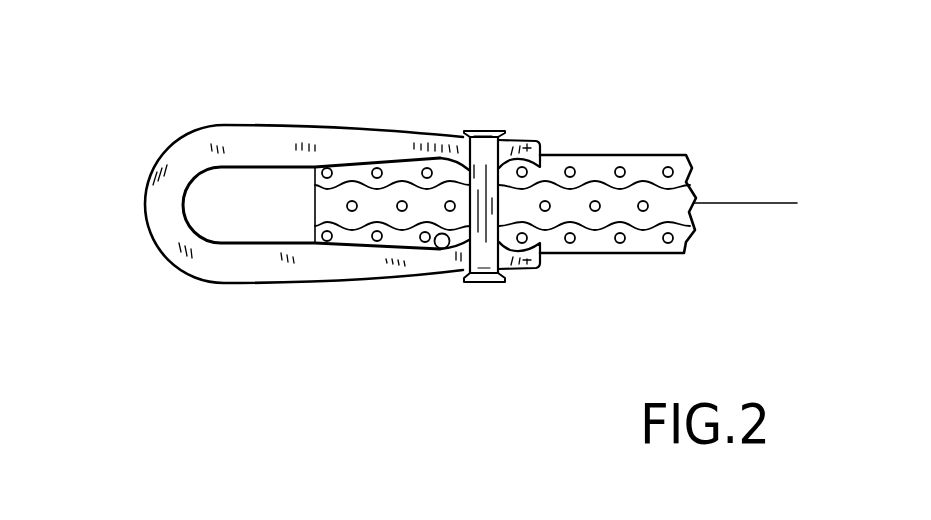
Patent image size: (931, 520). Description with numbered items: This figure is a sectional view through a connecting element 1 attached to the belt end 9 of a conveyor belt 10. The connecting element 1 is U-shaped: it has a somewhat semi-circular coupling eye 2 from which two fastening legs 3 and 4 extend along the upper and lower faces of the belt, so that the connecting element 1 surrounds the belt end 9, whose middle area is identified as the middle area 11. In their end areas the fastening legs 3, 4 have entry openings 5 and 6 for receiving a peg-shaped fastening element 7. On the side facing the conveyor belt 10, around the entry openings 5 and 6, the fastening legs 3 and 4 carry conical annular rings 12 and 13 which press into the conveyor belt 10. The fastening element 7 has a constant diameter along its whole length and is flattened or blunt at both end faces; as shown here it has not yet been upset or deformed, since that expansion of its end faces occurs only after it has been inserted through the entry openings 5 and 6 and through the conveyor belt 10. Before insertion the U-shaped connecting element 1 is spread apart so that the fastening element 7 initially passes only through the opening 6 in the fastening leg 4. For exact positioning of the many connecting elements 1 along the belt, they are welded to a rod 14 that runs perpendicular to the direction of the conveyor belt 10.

The connecting element 1 is at (444, 212).
The coupling eye 2 is at (150, 210).
The fastening leg 3 is at (279, 140).
The fastening leg 4 is at (392, 274).
The entry opening 5 is at (543, 220).
The entry opening 6 is at (517, 272).
The fastening element 7 is at (485, 264).
The belt end 9 is at (313, 205).
The conveyor belt 10 is at (658, 256).
The middle area of the belt end 11 is at (772, 203).
The conical annular ring 12 is at (540, 145).
The conical annular ring 13 is at (535, 263).
The rod 14 is at (441, 255).